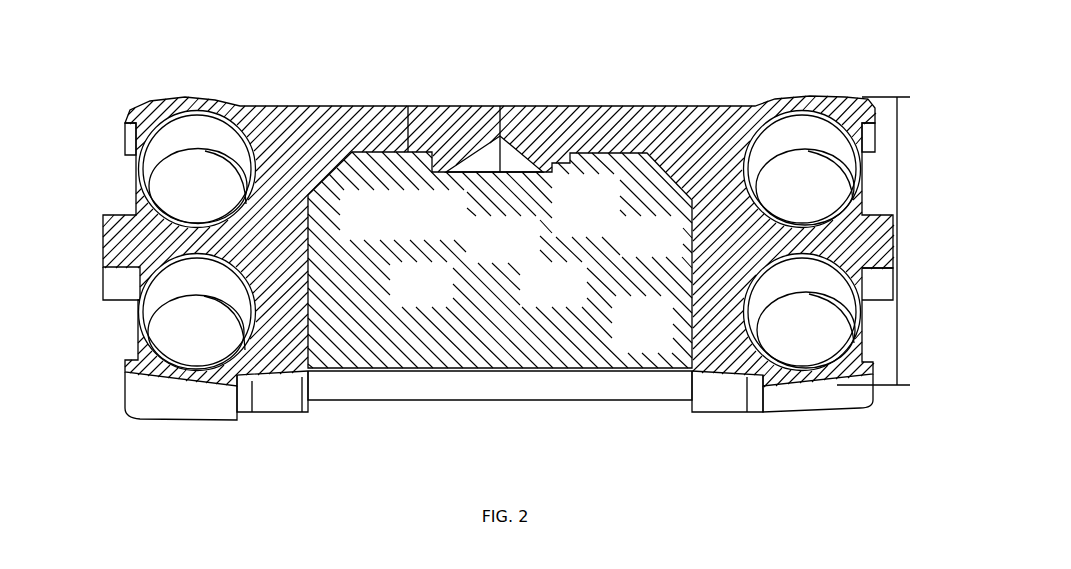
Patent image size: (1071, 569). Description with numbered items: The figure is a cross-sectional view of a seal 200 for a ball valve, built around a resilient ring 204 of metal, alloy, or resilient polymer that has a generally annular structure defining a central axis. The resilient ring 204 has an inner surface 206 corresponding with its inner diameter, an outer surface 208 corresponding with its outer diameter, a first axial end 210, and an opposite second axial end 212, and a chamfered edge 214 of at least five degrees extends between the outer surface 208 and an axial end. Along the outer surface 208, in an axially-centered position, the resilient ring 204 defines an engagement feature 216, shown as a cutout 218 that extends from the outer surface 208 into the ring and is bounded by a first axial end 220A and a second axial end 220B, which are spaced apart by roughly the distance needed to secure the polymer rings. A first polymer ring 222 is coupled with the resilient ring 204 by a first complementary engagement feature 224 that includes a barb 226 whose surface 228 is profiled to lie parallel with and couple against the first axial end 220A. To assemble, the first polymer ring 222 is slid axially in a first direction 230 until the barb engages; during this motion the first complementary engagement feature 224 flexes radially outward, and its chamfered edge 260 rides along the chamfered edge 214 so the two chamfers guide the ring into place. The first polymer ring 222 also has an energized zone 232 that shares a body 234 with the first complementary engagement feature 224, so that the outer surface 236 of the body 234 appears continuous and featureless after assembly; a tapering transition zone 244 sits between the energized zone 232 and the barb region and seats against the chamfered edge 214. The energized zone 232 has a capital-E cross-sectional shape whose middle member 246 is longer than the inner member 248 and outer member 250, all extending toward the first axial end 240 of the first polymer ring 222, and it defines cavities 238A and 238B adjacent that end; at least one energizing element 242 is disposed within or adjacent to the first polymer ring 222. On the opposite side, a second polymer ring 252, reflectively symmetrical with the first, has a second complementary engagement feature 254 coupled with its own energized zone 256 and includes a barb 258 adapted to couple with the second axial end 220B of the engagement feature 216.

The seal 200 is at (117, 87).
The resilient ring 204 is at (507, 330).
The inner surface 206 is at (418, 387).
The outer surface 208 is at (602, 151).
The first axial end 210 is at (694, 352).
The second axial end 212 is at (307, 347).
The chamfered edge 214 is at (335, 170).
The engagement feature 216 is at (500, 172).
The cutout 218 is at (465, 172).
The first axial end of the engagement feature 220A is at (572, 166).
The second axial end of the engagement feature 220B is at (431, 166).
The first polymer ring 222 is at (766, 98).
The first complementary engagement feature 224 is at (537, 117).
The barb 226 is at (543, 118).
The surface of the barb 228 is at (552, 163).
The first direction 230 is at (702, 284).
The energized zone 232 is at (790, 400).
The body 234 is at (710, 112).
The outer surface of the body 236 is at (631, 105).
The cavity 238A is at (878, 333).
The cavity 238B is at (873, 190).
The first axial end of the first polymer ring 240 is at (890, 400).
The energizing element 242 is at (868, 165).
The transition zone 244 is at (688, 172).
The middle member 246 is at (873, 238).
The inner member 248 is at (845, 398).
The outer member 250 is at (862, 117).
The second polymer ring 252 is at (175, 398).
The second complementary engagement feature 254 is at (455, 130).
The energized zone 256 is at (210, 108).
The barb 258 is at (407, 150).
The chamfered edge 260 is at (516, 147).